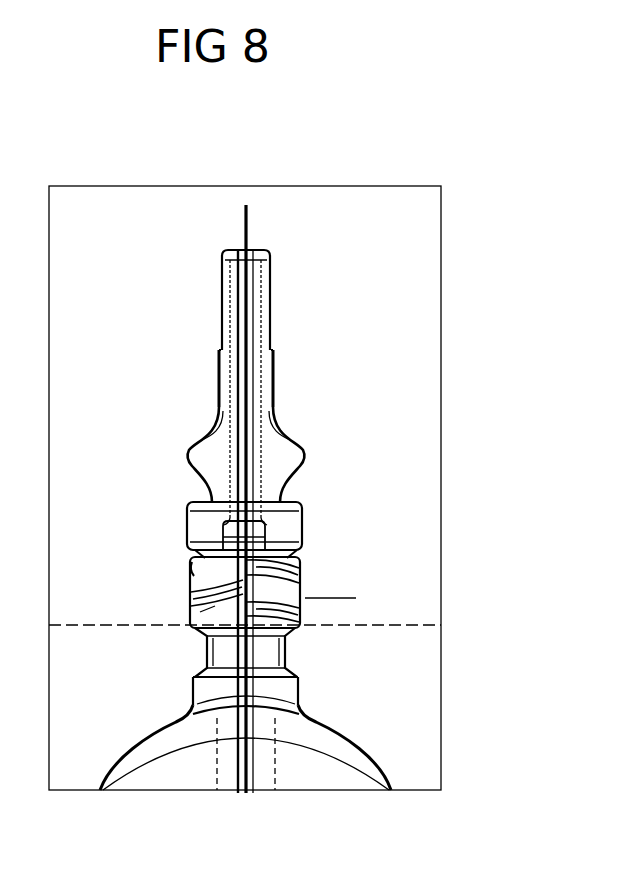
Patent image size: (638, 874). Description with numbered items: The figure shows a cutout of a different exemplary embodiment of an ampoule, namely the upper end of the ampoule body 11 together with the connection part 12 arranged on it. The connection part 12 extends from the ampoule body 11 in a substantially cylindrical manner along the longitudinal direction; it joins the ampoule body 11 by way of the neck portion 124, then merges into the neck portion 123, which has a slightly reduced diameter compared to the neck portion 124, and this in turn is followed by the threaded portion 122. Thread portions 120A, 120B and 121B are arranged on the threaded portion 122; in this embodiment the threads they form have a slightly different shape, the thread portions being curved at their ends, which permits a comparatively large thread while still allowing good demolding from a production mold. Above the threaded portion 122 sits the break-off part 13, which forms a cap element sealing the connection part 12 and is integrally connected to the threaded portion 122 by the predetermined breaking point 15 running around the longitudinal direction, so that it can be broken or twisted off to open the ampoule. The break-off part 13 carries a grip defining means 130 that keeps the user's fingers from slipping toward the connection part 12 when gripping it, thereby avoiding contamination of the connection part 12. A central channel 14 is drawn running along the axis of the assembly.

The ampoule body 11 is at (345, 770).
The connection part 12 is at (190, 689).
The break-off part 13 is at (270, 290).
The central rod / bore 14 is at (238, 793).
The predetermined breaking point 15 is at (297, 545).
The thread portion 120A is at (302, 572).
The thread portion 120B is at (192, 567).
The thread portion 121B is at (190, 598).
The threaded portion 122 is at (214, 612).
The neck portion 123 is at (275, 652).
The neck portion 124 is at (275, 690).
The grip defining means 130 is at (290, 432).